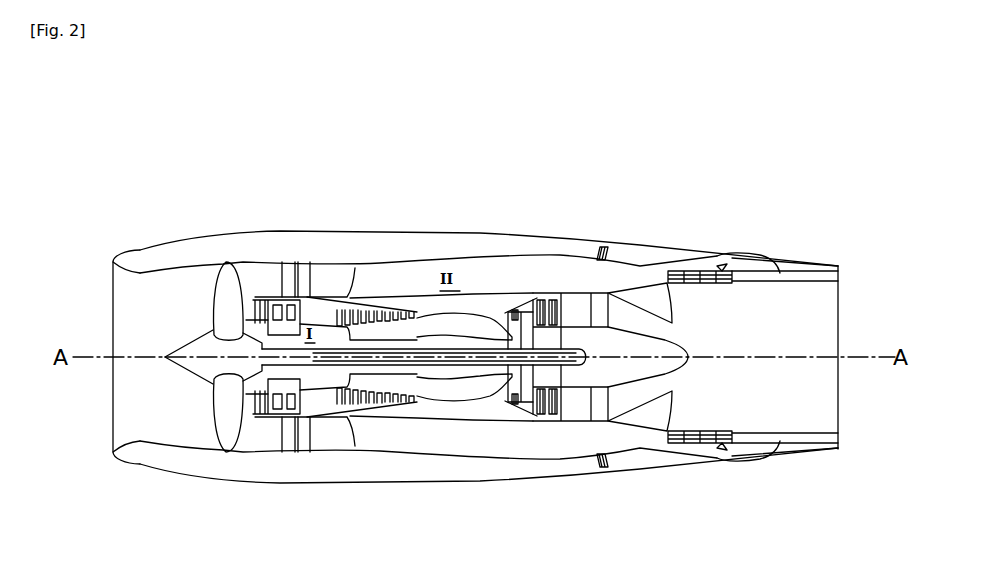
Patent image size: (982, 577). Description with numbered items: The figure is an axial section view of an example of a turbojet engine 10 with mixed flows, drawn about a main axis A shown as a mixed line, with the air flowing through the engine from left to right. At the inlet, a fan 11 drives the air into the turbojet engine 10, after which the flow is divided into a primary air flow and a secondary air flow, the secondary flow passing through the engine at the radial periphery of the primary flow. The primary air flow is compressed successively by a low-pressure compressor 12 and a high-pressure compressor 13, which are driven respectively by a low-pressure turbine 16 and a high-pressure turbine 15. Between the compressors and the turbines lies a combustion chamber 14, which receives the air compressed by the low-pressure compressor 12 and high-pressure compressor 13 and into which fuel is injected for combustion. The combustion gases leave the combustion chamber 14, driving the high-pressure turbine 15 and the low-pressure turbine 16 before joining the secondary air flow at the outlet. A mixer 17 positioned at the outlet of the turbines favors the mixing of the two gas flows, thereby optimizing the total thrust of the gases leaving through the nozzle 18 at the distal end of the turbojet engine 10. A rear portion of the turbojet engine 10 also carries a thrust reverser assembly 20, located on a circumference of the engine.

The turbojet engine 10 is at (190, 147).
The fan 11 is at (232, 440).
The low-pressure compressor 12 is at (278, 415).
The high-pressure compressor 13 is at (380, 425).
The combustion chamber 14 is at (473, 310).
The high-pressure turbine 15 is at (518, 403).
The low-pressure turbine 16 is at (547, 377).
The mixer 17 is at (645, 297).
The nozzle 18 is at (797, 431).
The thrust reverser assembly 20 is at (720, 232).